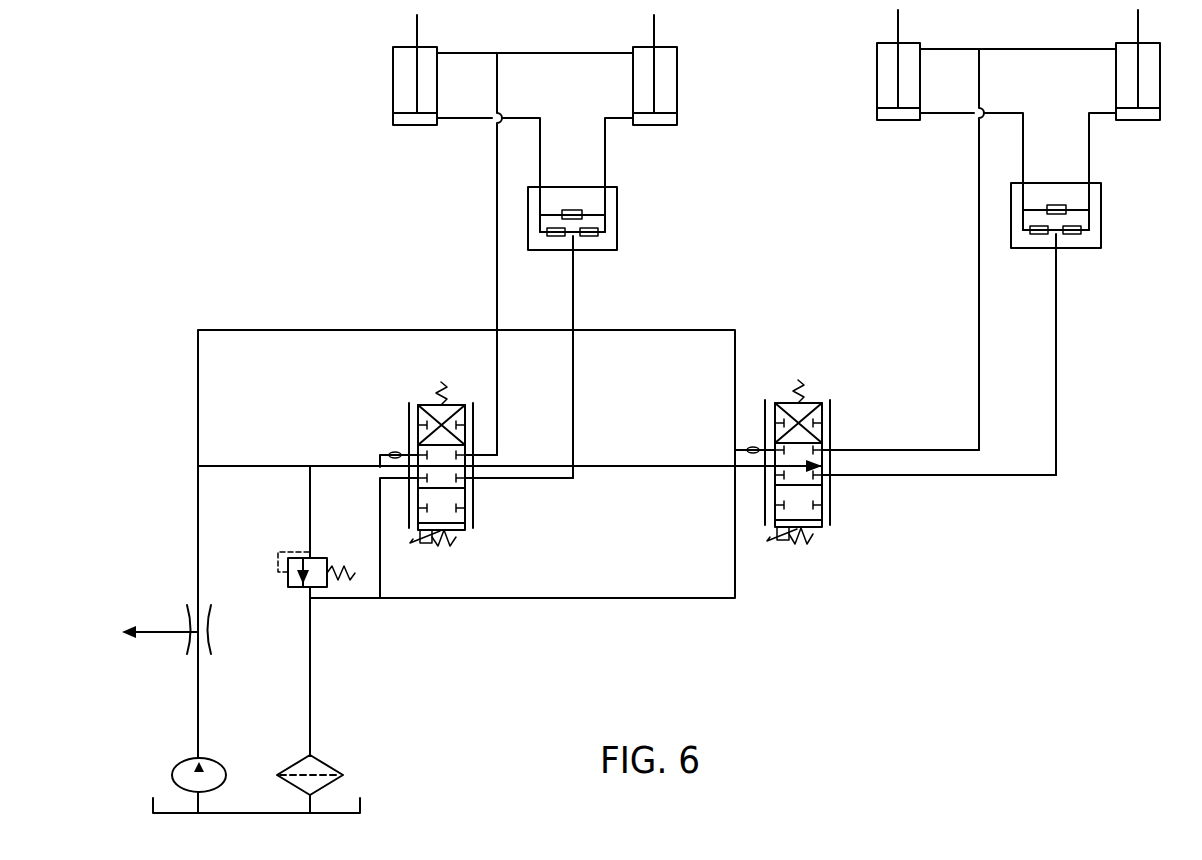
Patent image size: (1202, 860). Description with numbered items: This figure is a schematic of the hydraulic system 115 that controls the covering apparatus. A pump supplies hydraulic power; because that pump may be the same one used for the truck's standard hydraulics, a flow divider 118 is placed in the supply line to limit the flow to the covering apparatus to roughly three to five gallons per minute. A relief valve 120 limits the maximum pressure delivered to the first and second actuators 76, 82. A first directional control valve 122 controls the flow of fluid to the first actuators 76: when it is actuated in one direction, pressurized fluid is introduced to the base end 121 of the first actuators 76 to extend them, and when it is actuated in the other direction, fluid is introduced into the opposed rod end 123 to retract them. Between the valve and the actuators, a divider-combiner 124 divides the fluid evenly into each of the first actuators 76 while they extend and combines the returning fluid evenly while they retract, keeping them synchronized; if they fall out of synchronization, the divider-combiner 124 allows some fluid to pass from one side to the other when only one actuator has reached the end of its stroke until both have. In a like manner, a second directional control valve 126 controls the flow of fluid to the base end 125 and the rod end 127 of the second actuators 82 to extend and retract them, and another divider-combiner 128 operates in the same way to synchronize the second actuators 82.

The first actuators 76 is at (392, 84).
The second actuators 82 is at (877, 80).
The hydraulic system 115 is at (582, 616).
The flow divider 118 is at (203, 609).
The relief valve 120 is at (315, 589).
The base end 121 is at (415, 127).
The first directional control valve 122 is at (423, 405).
The rod end 123 is at (435, 44).
The divider-combiner 124 is at (617, 218).
The base end 125 is at (898, 122).
The second directional control valve 126 is at (778, 402).
The rod end 127 is at (920, 42).
The divider-combiner 128 is at (1102, 214).